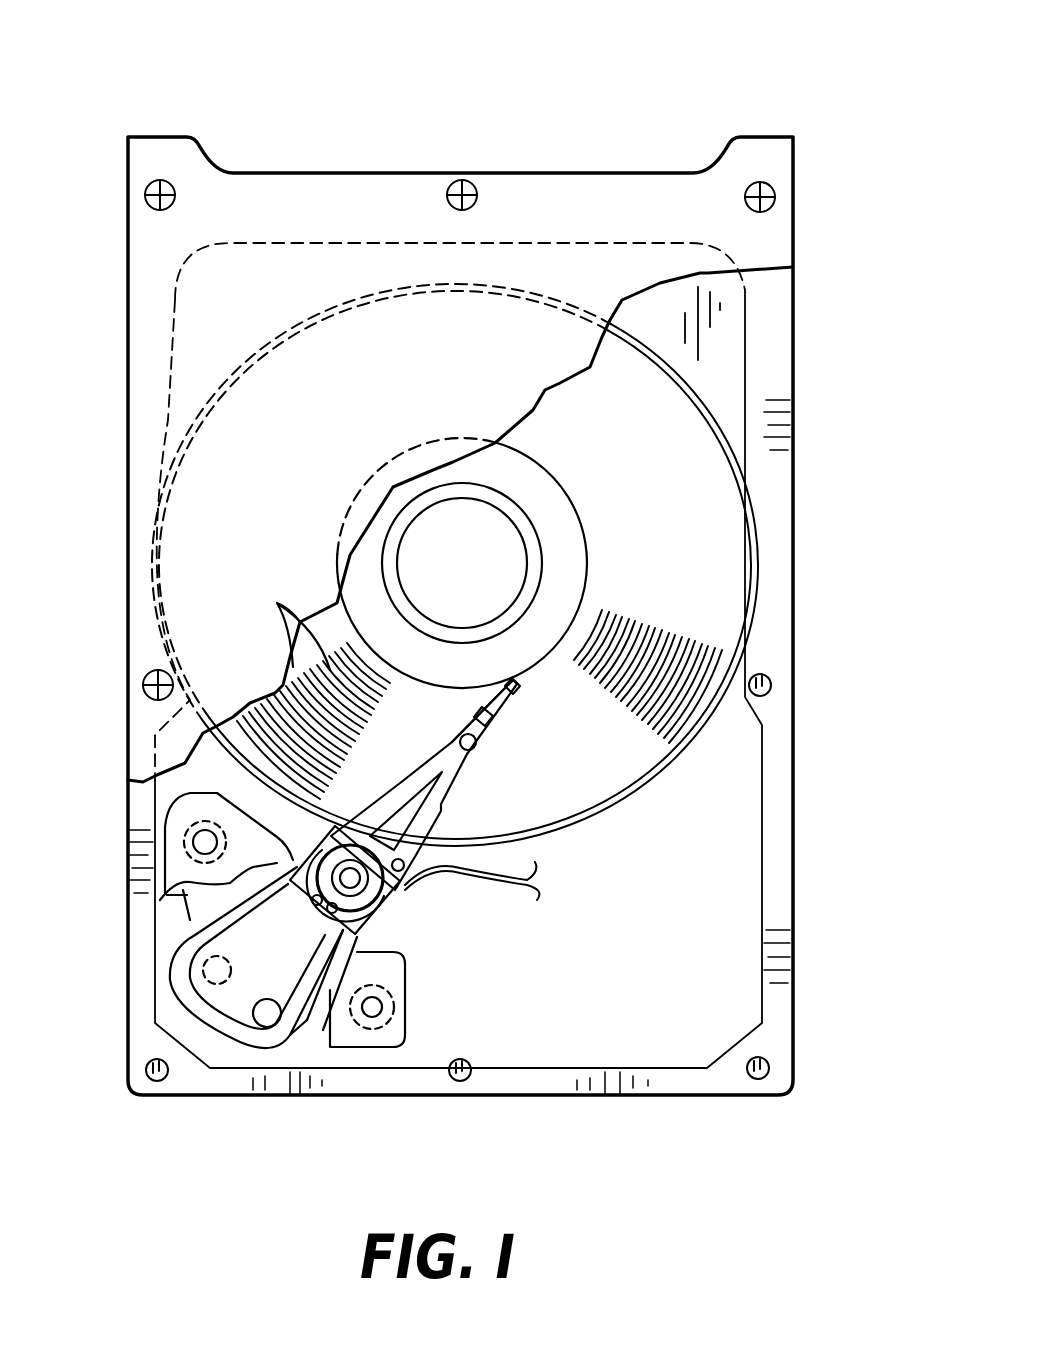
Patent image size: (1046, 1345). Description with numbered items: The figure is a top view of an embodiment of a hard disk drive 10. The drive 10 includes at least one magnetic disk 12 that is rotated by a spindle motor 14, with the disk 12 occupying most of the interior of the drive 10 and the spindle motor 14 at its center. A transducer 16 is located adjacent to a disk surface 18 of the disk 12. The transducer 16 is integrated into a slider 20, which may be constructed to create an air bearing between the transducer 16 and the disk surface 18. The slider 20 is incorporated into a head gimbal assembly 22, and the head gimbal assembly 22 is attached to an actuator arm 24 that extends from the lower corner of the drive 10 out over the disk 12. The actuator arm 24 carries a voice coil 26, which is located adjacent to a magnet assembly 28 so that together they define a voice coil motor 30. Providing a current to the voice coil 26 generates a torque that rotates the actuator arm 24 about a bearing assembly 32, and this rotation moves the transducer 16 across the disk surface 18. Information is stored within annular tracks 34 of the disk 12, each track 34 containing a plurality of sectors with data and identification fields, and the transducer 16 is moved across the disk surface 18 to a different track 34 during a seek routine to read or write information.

The hard disk drive 10 is at (698, 70).
The magnetic disk 12 is at (703, 523).
The spindle motor 14 is at (445, 520).
The transducer 16 is at (533, 688).
The disk surface 18 is at (683, 587).
The slider 20 is at (530, 698).
The head gimbal assembly 22 is at (532, 697).
The actuator arm 24 is at (450, 783).
The voice coil 26 is at (190, 960).
The magnet assembly 28 is at (190, 910).
The voice coil motor 30 is at (303, 1010).
The bearing assembly 32 is at (365, 890).
The annular tracks 34 is at (282, 609).